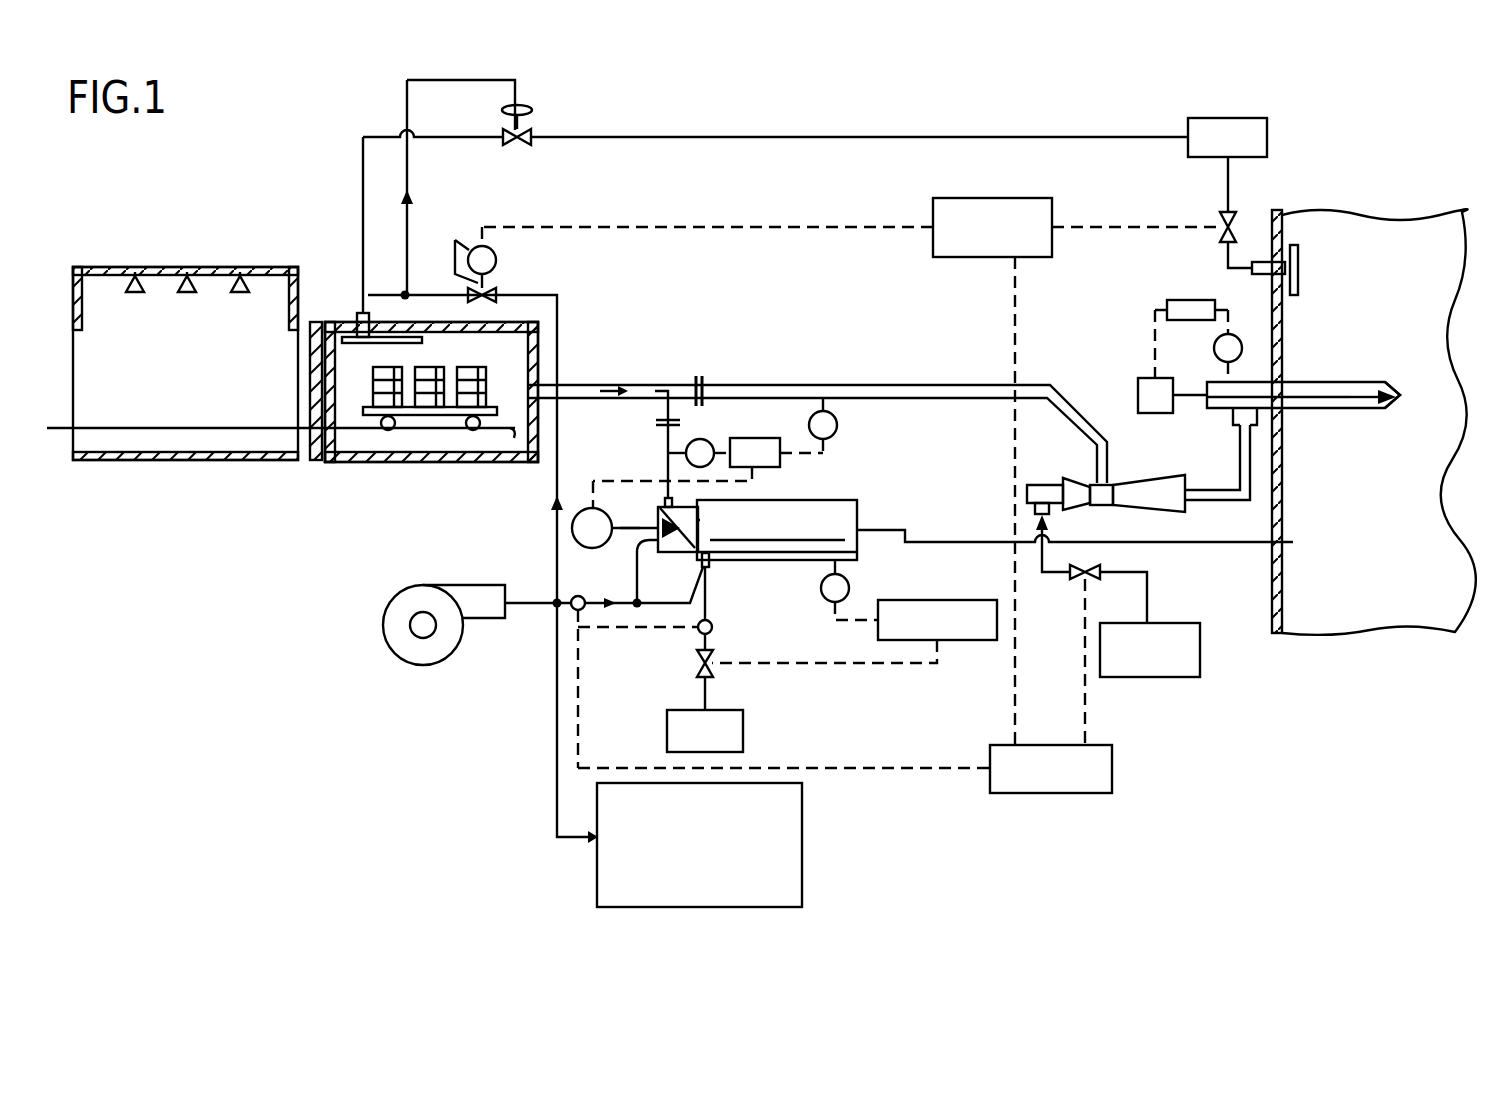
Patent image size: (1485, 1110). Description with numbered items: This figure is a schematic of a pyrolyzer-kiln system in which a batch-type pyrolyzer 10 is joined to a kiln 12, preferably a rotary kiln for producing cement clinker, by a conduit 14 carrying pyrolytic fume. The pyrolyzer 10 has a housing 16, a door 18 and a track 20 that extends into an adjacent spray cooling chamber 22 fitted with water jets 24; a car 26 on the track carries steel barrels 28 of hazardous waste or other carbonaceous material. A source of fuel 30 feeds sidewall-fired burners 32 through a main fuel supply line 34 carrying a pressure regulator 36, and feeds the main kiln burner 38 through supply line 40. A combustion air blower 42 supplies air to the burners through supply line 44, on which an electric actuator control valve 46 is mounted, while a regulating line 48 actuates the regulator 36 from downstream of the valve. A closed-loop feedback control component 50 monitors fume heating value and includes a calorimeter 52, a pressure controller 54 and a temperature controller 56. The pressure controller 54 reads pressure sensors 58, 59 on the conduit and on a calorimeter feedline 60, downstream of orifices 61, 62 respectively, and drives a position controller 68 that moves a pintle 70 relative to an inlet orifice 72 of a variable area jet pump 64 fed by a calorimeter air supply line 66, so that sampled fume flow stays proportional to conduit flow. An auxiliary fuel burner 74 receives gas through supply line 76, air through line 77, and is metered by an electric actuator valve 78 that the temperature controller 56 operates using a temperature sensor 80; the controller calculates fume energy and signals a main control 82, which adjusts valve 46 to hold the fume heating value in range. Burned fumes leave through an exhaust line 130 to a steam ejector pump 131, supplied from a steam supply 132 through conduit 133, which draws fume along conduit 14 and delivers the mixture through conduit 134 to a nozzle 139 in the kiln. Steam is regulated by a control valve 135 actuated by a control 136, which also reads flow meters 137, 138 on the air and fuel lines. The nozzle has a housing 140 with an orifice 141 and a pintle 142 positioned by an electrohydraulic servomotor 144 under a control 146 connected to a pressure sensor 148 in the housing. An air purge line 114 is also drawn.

The batch-type pyrolyzer 10 is at (395, 470).
The kiln 12 is at (1315, 218).
The conduit 14 is at (850, 384).
The housing 16 is at (465, 462).
The door 18 is at (314, 462).
The track 20 is at (440, 432).
The spray cooling chamber 22 is at (96, 462).
The water jets 24 is at (151, 270).
The car 26 is at (495, 432).
The steel barrels 28 is at (470, 367).
The source of fuel 30 is at (1225, 118).
The sidewall-fired burners 32 is at (360, 318).
The main fuel supply line 34 is at (645, 137).
The pressure regulator 36 is at (530, 110).
The main kiln burner 38 is at (1298, 258).
The supply line 40 is at (1226, 185).
The combustion air blower 42 is at (383, 618).
The supply line 44 is at (560, 345).
The electric actuator control valve 46 is at (496, 260).
The regulating line 48 is at (465, 80).
The closed-loop feedback control component 50 is at (780, 498).
The calorimeter 52 is at (802, 538).
The pressure controller 54 is at (765, 438).
The temperature controller 56 is at (965, 600).
The pressure sensor 58 is at (837, 423).
The pressure sensor 59 is at (668, 458).
The calorimeter feedline 60 is at (670, 408).
The orifice 61 is at (705, 378).
The orifice 62 is at (656, 422).
The variable area jet pump 64 is at (684, 554).
The calorimeter air supply line 66 is at (637, 560).
The position controller 68 is at (625, 510).
The pintle 70 is at (622, 528).
The inlet orifice 72 is at (700, 520).
The auxiliary fuel burner 74 is at (710, 566).
The supply line 76 is at (707, 696).
The line 77 is at (706, 600).
The electric actuator valve 78 is at (699, 660).
The temperature sensor 80 is at (821, 590).
The main control 82 is at (1020, 198).
The air purge line 114 is at (555, 765).
The exhaust line 130 is at (952, 542).
The steam ejector pump 131 is at (1140, 480).
The steam supply 132 is at (1165, 677).
The conduit 133 is at (1147, 598).
The conduit 134 is at (1240, 455).
The control valve 135 is at (1102, 570).
The control 136 is at (1112, 765).
The flow meter 137 is at (573, 597).
The flow meter 138 is at (713, 630).
The nozzle 139 is at (1302, 410).
The housing 140 is at (1305, 382).
The orifice 141 is at (1398, 388).
The pintle 142 is at (1345, 406).
The electrohydraulic servomotor 144 is at (1138, 390).
The control 146 is at (1178, 300).
The pressure sensor 148 is at (1214, 345).